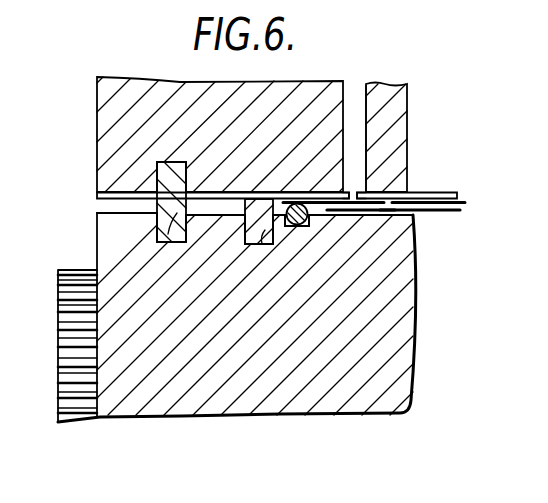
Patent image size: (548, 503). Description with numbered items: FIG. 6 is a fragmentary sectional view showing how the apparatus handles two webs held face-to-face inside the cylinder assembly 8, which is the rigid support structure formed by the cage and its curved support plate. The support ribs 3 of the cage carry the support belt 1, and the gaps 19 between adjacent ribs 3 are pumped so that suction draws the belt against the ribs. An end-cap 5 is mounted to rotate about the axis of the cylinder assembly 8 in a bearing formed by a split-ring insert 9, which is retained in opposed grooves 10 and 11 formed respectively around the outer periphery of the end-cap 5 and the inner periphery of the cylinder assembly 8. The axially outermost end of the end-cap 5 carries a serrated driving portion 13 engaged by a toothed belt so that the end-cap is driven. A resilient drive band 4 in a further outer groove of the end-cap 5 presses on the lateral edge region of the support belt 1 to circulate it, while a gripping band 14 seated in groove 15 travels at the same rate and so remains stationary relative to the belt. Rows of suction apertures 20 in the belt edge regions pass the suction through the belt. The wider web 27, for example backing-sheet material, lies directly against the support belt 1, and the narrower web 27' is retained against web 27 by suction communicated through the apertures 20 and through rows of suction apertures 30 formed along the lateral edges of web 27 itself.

The support belt 1 is at (450, 191).
The ribs 3 is at (379, 120).
The drive band 4 is at (286, 228).
The end-cap 5 is at (336, 361).
The cylinder assembly 8 is at (127, 107).
The split-ring insert 9 is at (173, 190).
The groove 10 is at (157, 208).
The groove 11 is at (157, 168).
The serrated driving portion 13 is at (78, 293).
The gripping band 14 is at (308, 220).
The groove 15 is at (304, 226).
The gap 19 is at (352, 100).
The suction aperture 20 is at (357, 186).
The web 27 is at (391, 183).
The web 27' is at (415, 224).
The suction aperture 30 is at (388, 206).